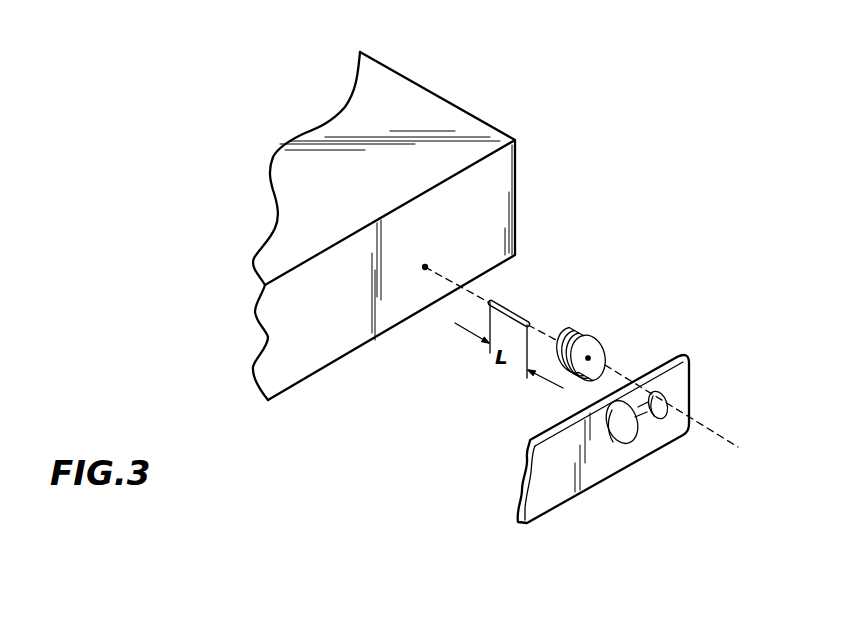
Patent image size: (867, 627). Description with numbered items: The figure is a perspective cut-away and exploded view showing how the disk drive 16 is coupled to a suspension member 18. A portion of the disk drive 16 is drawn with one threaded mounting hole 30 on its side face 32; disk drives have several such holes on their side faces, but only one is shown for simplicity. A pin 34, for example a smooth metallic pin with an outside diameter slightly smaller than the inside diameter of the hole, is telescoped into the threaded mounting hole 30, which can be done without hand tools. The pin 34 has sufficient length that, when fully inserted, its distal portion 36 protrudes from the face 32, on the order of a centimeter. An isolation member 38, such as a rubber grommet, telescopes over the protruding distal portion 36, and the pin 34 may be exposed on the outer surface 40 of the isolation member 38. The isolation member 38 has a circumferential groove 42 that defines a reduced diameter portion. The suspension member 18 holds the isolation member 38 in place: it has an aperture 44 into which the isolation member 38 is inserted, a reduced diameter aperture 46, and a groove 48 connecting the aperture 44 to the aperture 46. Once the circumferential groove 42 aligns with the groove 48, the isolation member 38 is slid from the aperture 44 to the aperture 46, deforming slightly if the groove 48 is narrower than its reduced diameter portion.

The disk drive 16 is at (453, 118).
The face 32 is at (498, 175).
The threaded mounting hole 30 is at (425, 265).
The pin 34 is at (512, 308).
The distal portion 36 is at (613, 325).
The circumferential groove 42 is at (583, 337).
The isolation member 38 is at (605, 347).
The outer surface 40 is at (595, 351).
The suspension member 18 is at (678, 375).
The aperture 44 is at (615, 428).
The reduced diameter aperture 46 is at (663, 423).
The groove 48 is at (647, 425).